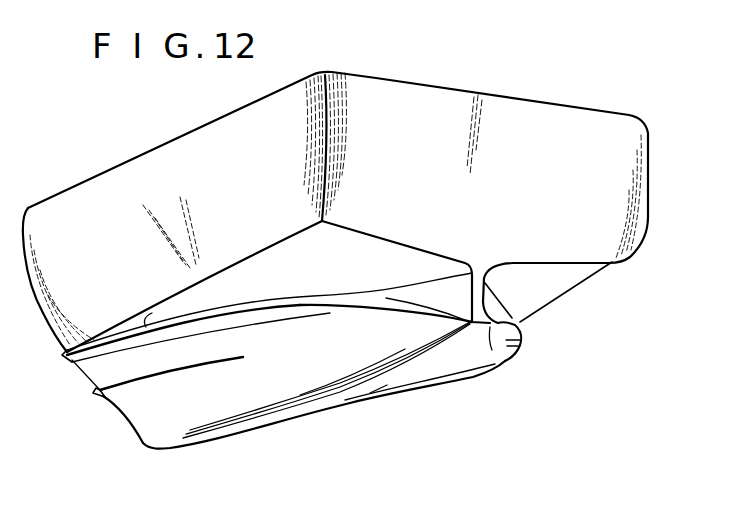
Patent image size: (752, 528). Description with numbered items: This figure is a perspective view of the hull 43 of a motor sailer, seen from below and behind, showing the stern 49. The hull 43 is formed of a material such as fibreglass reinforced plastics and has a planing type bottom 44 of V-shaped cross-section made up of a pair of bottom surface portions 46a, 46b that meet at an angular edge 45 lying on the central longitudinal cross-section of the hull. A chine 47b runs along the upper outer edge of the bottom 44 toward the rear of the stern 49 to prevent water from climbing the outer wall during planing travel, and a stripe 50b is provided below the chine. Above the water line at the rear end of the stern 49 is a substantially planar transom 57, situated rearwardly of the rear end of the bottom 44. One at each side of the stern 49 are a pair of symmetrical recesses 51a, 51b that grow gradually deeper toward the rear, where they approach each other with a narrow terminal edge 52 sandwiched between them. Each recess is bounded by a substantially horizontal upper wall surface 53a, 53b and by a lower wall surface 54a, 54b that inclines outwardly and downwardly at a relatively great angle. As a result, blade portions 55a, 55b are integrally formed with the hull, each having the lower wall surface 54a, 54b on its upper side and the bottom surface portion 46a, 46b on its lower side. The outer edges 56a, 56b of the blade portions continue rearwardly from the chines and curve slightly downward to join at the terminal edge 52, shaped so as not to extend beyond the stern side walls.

The hull 43 is at (147, 143).
The transom 57 is at (486, 102).
The upper wall surface 53b is at (316, 246).
The narrow terminal edge 52 is at (470, 280).
The upper wall surface 53a is at (597, 271).
The recess 51a is at (542, 285).
The lower wall surface 54a is at (512, 323).
The blade portion 55a is at (522, 341).
The bottom surface portion 46a is at (516, 350).
The outer edge 56a is at (492, 328).
The stern 49 is at (453, 398).
The blade portion 55b is at (411, 336).
The outer edge 56b is at (432, 318).
The lower wall surface 54b is at (384, 298).
The recess 51b is at (308, 299).
The bottom surface portion 46b is at (331, 365).
The angular edge 45 is at (264, 423).
The planing type bottom 44 is at (215, 450).
The rim 50b is at (148, 441).
The chine 47b is at (95, 357).